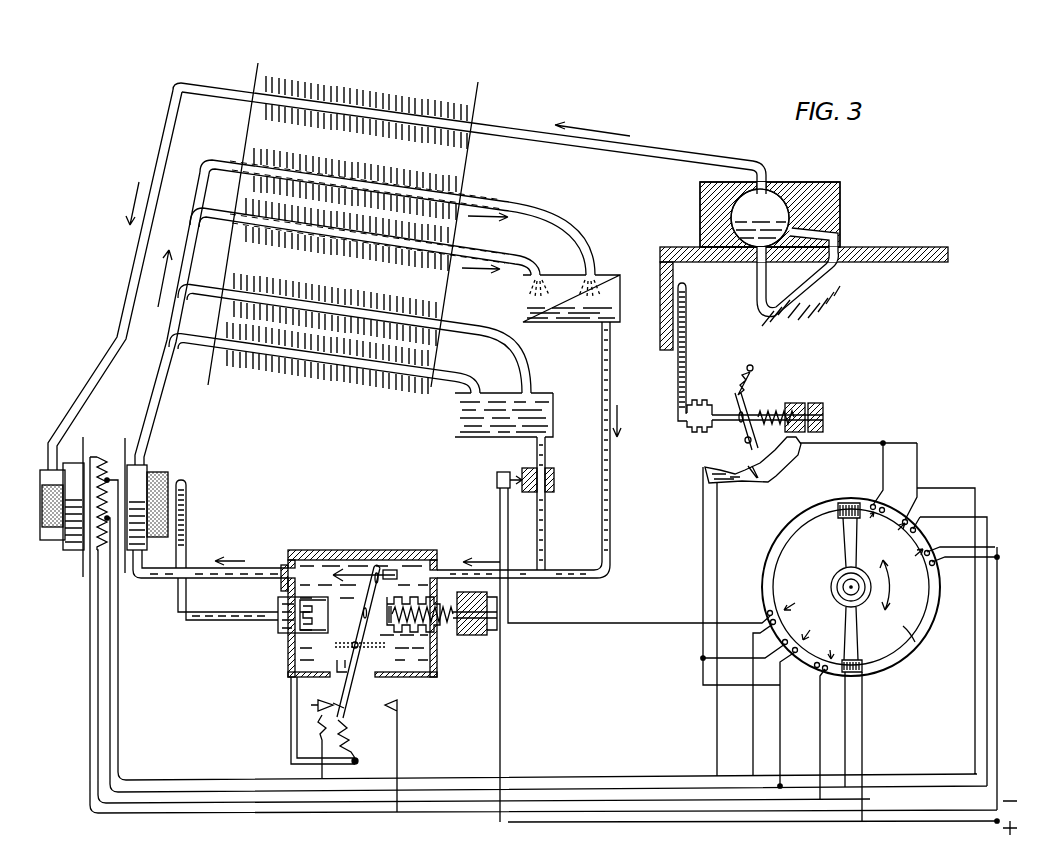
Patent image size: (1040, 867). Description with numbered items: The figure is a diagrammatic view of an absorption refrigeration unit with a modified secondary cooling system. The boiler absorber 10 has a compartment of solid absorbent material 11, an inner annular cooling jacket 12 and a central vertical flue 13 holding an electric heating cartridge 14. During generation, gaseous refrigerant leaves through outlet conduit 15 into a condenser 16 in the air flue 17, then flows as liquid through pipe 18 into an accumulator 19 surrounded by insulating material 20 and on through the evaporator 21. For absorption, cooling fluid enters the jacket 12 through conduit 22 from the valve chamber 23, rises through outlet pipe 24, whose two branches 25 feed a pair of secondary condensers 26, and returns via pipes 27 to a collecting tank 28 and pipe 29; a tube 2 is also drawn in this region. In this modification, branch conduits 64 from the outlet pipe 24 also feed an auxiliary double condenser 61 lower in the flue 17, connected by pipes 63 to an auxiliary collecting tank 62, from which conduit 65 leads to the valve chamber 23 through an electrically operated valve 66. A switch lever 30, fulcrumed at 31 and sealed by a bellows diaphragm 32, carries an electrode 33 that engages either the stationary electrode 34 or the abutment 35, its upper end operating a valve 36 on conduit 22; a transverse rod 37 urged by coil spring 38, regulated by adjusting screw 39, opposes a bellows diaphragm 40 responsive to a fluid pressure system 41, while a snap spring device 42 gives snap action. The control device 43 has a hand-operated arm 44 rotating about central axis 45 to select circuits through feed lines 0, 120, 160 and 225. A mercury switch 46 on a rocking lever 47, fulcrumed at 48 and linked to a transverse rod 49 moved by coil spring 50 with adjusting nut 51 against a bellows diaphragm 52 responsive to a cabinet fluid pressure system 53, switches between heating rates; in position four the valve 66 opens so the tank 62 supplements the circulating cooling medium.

The tube 2 is at (506, 199).
The boiler absorber 10 is at (49, 489).
The solid absorbent material 11 is at (42, 497).
The annular cooling jacket 12 is at (147, 466).
The central vertical flue 13 is at (83, 576).
The electric heating cartridge 14 is at (95, 458).
The outlet conduit 15 is at (121, 317).
The condenser 16 is at (343, 230).
The air flue 17 is at (250, 119).
The pipe 18 is at (648, 155).
The accumulator 19 is at (735, 215).
The insulating material 20 is at (838, 207).
The evaporator 21 is at (850, 287).
The conduit 22 is at (208, 569).
The valve chamber 23 is at (359, 602).
The outlet pipe 24 is at (151, 392).
The branches 25 is at (236, 158).
The secondary condensers 26 is at (375, 155).
The pipes 27 is at (502, 255).
The collecting tank 28 is at (566, 276).
The pipe 29 is at (600, 495).
The switch lever 30 is at (352, 672).
The fulcrum 31 is at (352, 648).
The bellows diaphragm 32 is at (340, 673).
The electrode 33 is at (345, 708).
The stationary electrode member 34 is at (400, 705).
The abutment 35 is at (318, 703).
The valve 36 is at (334, 552).
The transverse rod 37 is at (492, 630).
The coil spring 38 is at (446, 625).
The adjusting screw 39 is at (468, 597).
The bellows diaphragm 40 is at (283, 632).
The fluid pressure system 41 is at (188, 493).
The snap spring device 42 is at (360, 745).
The control device 43 is at (844, 597).
The hand-operated arm 44 is at (852, 572).
The central axis 45 is at (836, 585).
The mercury switch 46 is at (790, 453).
The rocking lever 47 is at (744, 436).
The fulcrum 48 is at (745, 441).
The transverse rod 49 is at (826, 416).
The coil spring 50 is at (774, 409).
The adjusting nut 51 is at (822, 403).
The bellows diaphragm 52 is at (700, 399).
The fluid pressure system 53 is at (688, 291).
The auxiliary double condenser 61 is at (370, 277).
The auxiliary collecting tank 62 is at (512, 384).
The pipes 63 is at (465, 320).
The branch conduits 64 is at (206, 282).
The conduit 65 is at (548, 460).
The electrically operated valve 66 is at (487, 468).
The feed line 120 is at (175, 806).
The feed line 160 is at (181, 792).
The feed line 225 is at (208, 767).
The feed line 0 is at (216, 813).